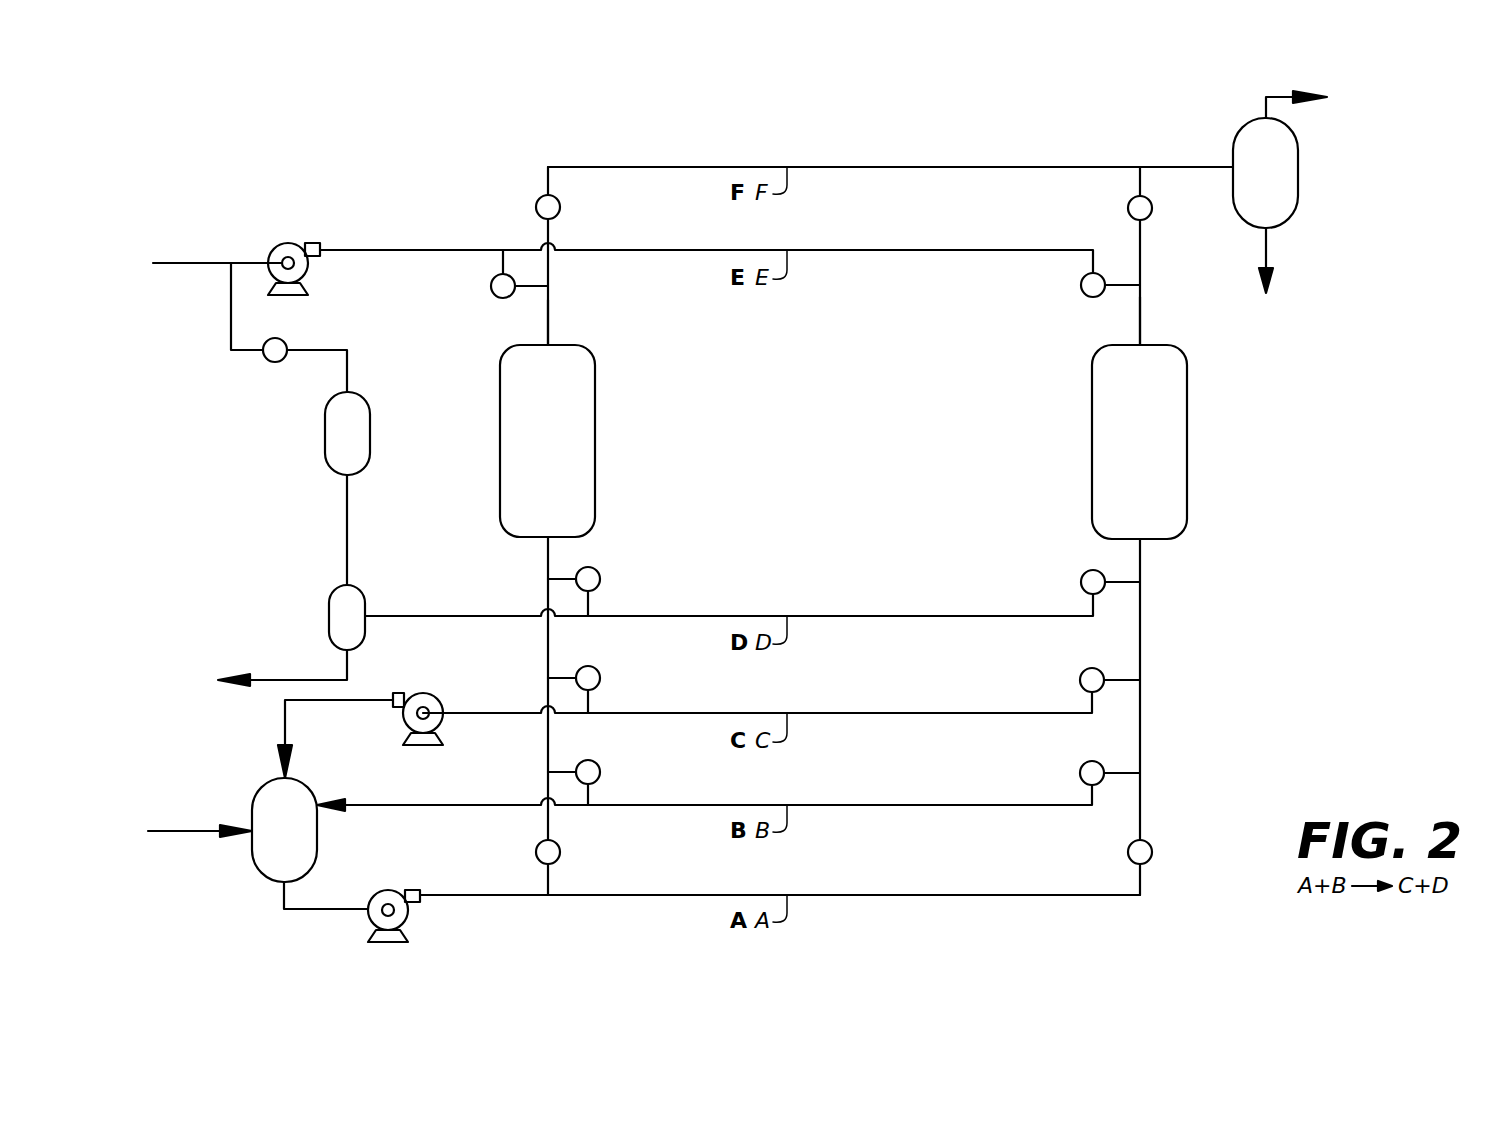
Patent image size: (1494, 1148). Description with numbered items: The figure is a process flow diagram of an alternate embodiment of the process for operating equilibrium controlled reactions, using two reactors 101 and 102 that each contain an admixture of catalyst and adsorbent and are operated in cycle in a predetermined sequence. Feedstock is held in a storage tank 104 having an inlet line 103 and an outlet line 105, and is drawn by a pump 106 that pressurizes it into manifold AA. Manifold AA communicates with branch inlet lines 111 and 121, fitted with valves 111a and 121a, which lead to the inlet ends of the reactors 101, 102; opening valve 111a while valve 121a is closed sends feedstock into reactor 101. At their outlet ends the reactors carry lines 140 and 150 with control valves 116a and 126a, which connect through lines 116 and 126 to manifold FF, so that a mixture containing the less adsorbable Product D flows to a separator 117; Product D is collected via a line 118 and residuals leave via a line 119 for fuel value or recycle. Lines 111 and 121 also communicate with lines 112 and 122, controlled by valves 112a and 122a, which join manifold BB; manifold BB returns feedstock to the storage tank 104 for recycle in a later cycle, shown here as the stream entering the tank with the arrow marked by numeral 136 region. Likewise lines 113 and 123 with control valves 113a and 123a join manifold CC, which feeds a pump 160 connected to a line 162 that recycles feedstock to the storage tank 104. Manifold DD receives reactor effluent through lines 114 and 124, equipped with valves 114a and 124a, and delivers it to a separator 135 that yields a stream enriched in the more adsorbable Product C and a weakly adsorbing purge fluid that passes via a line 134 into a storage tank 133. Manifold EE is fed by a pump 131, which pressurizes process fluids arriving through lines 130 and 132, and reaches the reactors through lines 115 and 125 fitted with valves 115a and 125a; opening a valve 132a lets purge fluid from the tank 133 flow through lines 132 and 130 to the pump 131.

The reactor 101 is at (547, 441).
The reactor 102 is at (1139, 442).
The inlet line 103 is at (210, 828).
The storage tank 104 is at (284, 830).
The outlet line 105 is at (318, 912).
The pump 106 is at (375, 892).
The branch inlet line 111 is at (548, 576).
The valve 111a is at (560, 852).
The line 112 is at (562, 772).
The control valve 112a is at (600, 778).
The line 113 is at (562, 678).
The control valve 113a is at (600, 682).
The line 114 is at (566, 579).
The valve 114a is at (600, 584).
The line 115 is at (531, 290).
The valve 115a is at (491, 286).
The line 116 is at (548, 181).
The control valve 116a is at (536, 212).
The separator 117 is at (1265, 173).
The line 118 is at (1275, 95).
The line 119 is at (1272, 250).
The branch inlet line 121 is at (1140, 558).
The valve 121a is at (1148, 844).
The line 122 is at (1118, 780).
The control valve 122a is at (1080, 777).
The line 123 is at (1119, 686).
The control valve 123a is at (1080, 684).
The line 124 is at (1121, 588).
The valve 124a is at (1081, 586).
The line 125 is at (1093, 270).
The valve 125a is at (1093, 297).
The line 126 is at (1140, 190).
The control valve 126a is at (1150, 216).
The line 130 is at (200, 263).
The pump 131 is at (282, 243).
The line 132 is at (231, 313).
The valve 132a is at (275, 362).
The storage tank 133 is at (326, 430).
The line 134 is at (347, 505).
The separator 135 is at (329, 596).
The C-enriched product line 136 is at (270, 684).
The line 140 is at (548, 322).
The line 150 is at (1140, 318).
The pump 160 is at (420, 694).
The line 162 is at (328, 704).